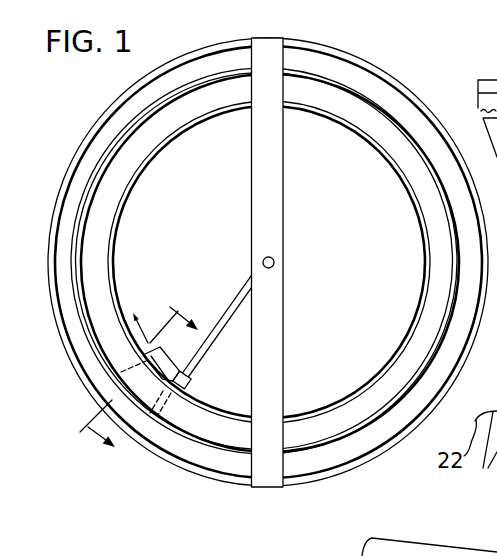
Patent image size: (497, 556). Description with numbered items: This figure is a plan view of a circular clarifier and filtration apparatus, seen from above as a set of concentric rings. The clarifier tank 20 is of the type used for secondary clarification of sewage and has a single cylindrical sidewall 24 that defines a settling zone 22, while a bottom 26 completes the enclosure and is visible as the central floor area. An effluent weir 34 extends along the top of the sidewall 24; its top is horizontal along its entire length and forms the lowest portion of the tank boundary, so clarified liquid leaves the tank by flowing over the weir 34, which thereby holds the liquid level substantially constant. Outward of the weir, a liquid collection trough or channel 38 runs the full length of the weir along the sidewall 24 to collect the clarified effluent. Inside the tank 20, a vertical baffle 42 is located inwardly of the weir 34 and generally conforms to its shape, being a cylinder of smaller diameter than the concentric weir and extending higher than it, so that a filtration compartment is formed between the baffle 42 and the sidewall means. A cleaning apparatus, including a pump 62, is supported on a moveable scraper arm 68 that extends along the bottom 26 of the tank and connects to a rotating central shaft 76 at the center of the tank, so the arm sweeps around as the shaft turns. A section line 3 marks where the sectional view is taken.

The clarifier tank 20 is at (426, 90).
The settling zone 22 is at (330, 140).
The sidewall 24 is at (133, 122).
The bottom 26 is at (350, 327).
The effluent weir 34 is at (103, 167).
The liquid collection trough or channel 38 is at (378, 447).
The vertical baffle 42 is at (413, 202).
The pump 62 is at (192, 386).
The moveable scraper arm 68 is at (245, 284).
The rotating central shaft 76 is at (275, 262).
The section line 3- 3 is at (133, 371).